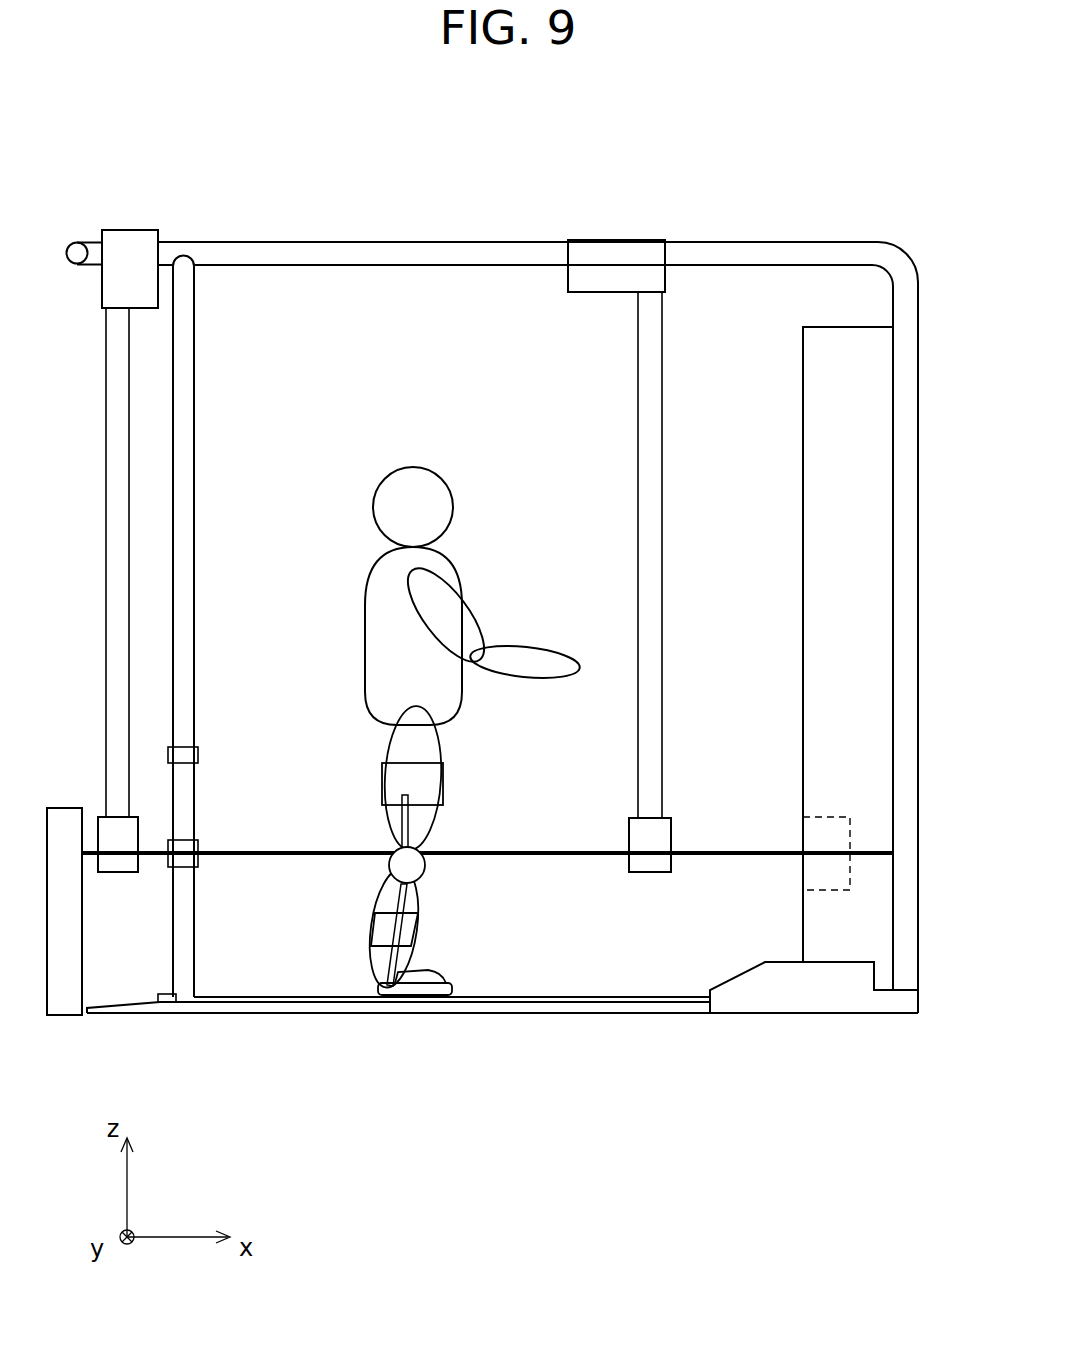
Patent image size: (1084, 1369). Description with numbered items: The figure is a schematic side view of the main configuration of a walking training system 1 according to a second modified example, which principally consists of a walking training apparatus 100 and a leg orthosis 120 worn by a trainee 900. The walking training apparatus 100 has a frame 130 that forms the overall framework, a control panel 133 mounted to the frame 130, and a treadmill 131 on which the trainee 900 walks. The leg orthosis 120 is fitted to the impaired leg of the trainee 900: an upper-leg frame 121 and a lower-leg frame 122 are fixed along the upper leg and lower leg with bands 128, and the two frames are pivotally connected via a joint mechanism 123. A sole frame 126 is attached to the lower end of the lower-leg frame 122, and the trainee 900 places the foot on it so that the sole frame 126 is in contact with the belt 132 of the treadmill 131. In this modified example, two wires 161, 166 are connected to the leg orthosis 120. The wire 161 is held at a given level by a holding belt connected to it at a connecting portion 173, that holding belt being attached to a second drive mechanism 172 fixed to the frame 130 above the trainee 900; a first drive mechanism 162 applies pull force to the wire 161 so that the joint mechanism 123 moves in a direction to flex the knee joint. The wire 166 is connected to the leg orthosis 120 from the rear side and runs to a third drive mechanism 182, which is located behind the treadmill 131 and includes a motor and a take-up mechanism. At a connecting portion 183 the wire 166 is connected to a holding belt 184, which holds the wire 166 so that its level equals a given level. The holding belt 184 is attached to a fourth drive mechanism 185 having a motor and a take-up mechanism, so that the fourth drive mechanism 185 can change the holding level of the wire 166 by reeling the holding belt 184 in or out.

The walking training system 1 is at (55, 105).
The walking training apparatus 100 is at (838, 216).
The leg orthosis 120 is at (417, 912).
The upper-leg frame 121 is at (400, 818).
The lower-leg frame 122 is at (402, 898).
The joint mechanism 123 is at (420, 878).
The sole frame 126 is at (405, 990).
The band 128 is at (437, 768).
The frame 130 is at (190, 328).
The treadmill 131 is at (698, 1018).
The belt 132 is at (207, 1016).
The control panel 133 is at (878, 508).
The wire 161 is at (556, 862).
The first drive mechanism 162 is at (850, 850).
The wire 166 is at (254, 862).
The second drive mechanism 172 is at (635, 241).
The connecting portion 173 is at (660, 878).
The third drive mechanism 182 is at (68, 820).
The connecting portion 183 is at (117, 876).
The holding belt 184 is at (116, 488).
The fourth drive mechanism 185 is at (125, 243).
The trainee 900 is at (438, 474).